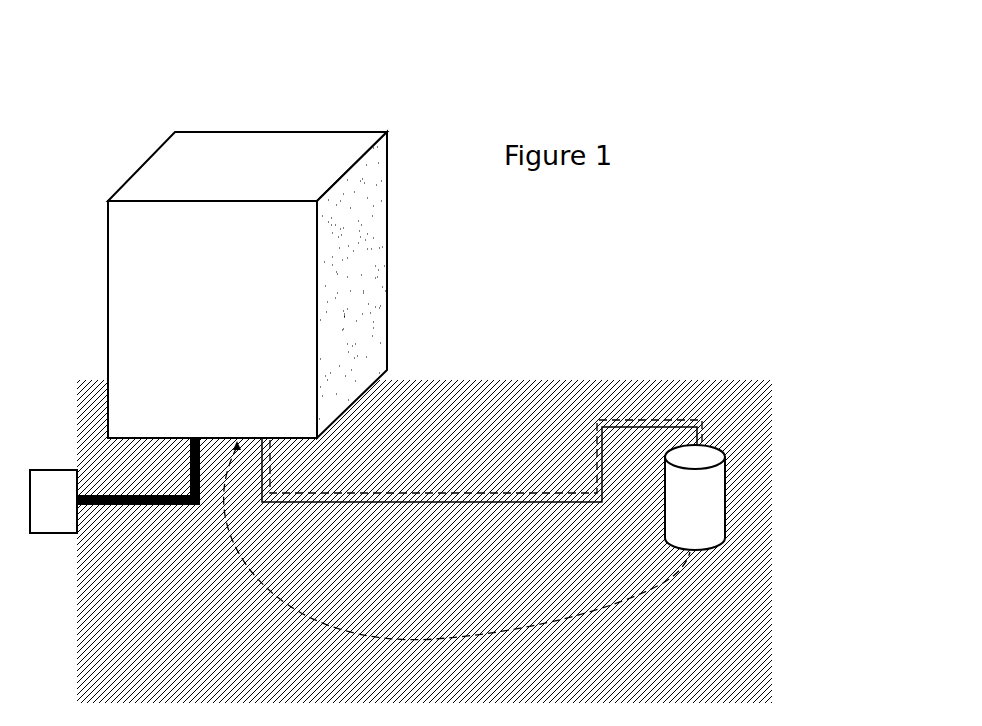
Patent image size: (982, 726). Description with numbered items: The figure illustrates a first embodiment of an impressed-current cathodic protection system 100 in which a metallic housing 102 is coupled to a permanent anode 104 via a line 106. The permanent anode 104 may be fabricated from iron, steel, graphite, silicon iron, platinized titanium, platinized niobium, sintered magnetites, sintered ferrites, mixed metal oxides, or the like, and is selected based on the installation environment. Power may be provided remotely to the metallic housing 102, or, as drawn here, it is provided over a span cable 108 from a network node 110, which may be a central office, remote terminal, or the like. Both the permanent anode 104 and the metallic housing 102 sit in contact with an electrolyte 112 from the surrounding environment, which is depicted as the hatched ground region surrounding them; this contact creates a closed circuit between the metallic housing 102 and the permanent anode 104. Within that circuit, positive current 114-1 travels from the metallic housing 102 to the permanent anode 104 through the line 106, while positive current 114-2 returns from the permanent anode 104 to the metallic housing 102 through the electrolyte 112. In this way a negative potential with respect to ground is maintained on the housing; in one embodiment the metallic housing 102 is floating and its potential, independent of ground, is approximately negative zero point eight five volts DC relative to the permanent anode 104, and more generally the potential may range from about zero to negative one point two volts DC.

The impressed-current cathodic protection system 100 is at (434, 391).
The metallic housing 102 is at (247, 285).
The permanent anode 104 is at (730, 432).
The line 106 is at (423, 522).
The span cable 108 is at (141, 524).
The network node 110 is at (43, 447).
The electrolyte 112 is at (785, 493).
The positive current 114-1 is at (450, 465).
The positive current 114-2 is at (522, 617).